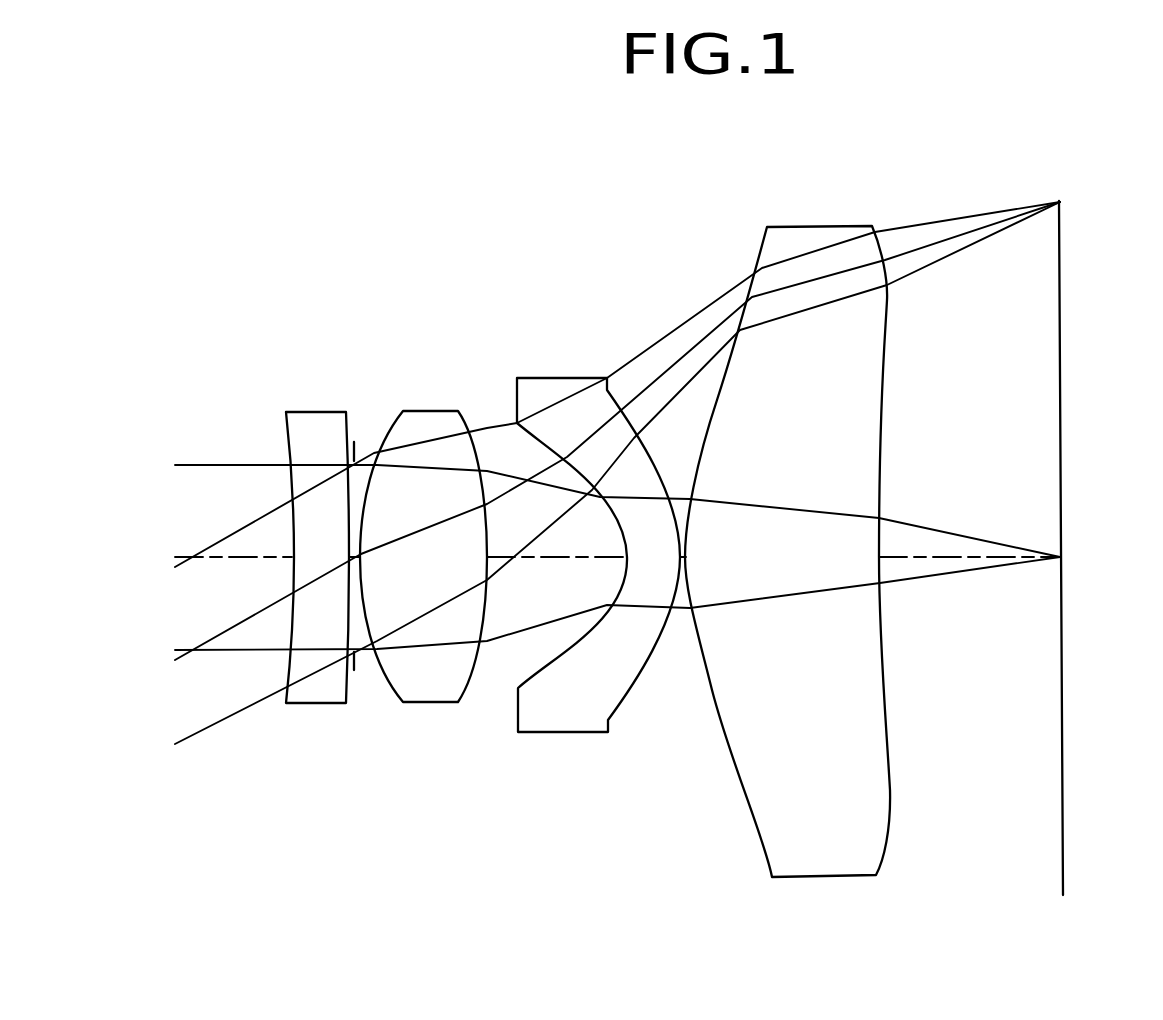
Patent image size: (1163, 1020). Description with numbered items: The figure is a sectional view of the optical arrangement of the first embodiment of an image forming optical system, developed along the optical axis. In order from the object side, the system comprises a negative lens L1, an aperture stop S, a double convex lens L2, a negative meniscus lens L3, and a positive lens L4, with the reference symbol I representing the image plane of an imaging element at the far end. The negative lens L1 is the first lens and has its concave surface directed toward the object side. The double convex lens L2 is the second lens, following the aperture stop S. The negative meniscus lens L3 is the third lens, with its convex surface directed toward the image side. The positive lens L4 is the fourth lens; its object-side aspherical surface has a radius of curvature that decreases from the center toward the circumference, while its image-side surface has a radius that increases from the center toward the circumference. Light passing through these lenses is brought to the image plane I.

The negative lens L1 is at (308, 412).
The aperture stop S is at (372, 437).
The double convex lens L2 is at (433, 411).
The negative meniscus lens L3 is at (557, 378).
The positive lens L4 is at (808, 226).
The image plane I is at (1060, 293).